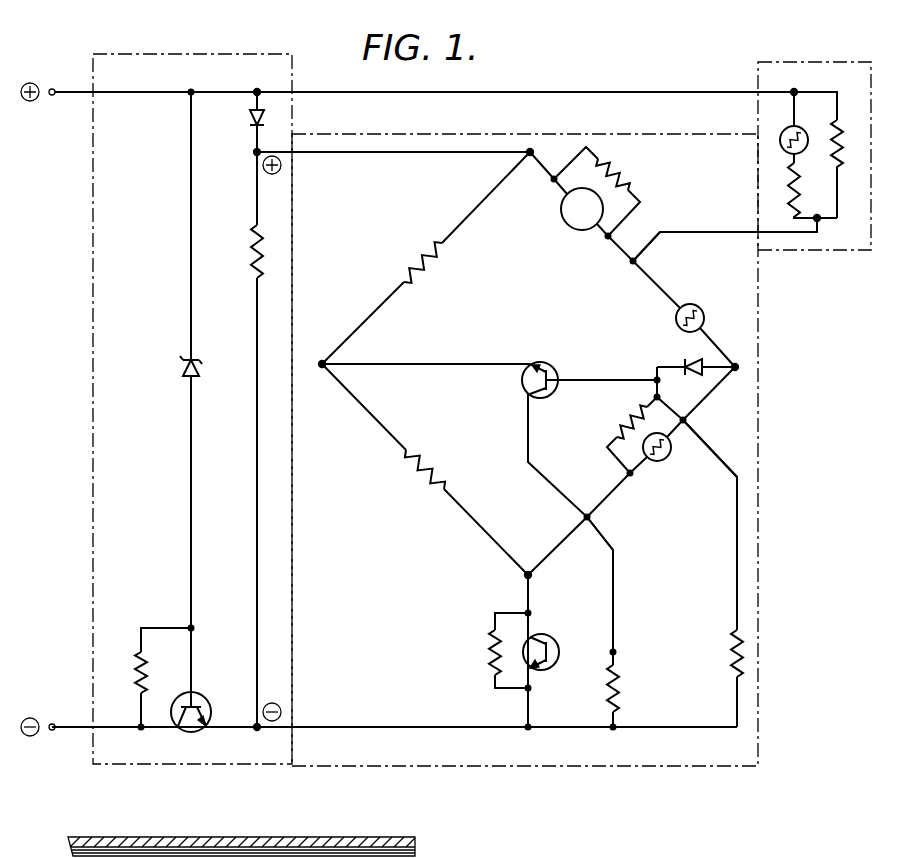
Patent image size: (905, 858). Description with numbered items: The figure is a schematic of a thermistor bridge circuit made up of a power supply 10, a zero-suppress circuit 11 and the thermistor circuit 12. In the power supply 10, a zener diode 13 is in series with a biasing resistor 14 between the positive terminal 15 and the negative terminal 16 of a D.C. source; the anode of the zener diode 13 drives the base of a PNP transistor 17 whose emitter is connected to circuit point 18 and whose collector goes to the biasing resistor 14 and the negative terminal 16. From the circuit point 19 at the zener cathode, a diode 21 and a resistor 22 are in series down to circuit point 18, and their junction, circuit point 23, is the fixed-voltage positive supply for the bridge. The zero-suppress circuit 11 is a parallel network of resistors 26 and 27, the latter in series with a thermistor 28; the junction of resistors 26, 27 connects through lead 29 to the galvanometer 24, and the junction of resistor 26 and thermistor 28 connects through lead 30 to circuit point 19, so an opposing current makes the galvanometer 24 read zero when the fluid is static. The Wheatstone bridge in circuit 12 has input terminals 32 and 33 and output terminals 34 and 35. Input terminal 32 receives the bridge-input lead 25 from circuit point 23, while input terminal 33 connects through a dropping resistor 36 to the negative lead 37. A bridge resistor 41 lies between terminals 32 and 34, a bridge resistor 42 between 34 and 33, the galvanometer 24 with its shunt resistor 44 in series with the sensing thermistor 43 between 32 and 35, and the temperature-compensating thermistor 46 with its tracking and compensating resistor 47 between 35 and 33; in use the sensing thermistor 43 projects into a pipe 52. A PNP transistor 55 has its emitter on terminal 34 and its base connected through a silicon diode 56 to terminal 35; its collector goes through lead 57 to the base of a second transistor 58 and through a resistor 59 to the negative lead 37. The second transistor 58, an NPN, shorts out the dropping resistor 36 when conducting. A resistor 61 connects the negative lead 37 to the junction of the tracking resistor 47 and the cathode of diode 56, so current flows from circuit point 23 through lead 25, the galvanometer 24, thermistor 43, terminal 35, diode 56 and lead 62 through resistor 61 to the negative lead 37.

The power supply 10 is at (203, 52).
The zero-suppress circuit 11 is at (810, 62).
The thermistor circuit 12 is at (758, 478).
The zener diode 13 is at (180, 370).
The biasing resistor 14 is at (135, 662).
The positive terminal 15 is at (52, 97).
The negative terminal 16 is at (52, 732).
The PNP transistor 17 is at (189, 734).
The circuit point 18 is at (257, 732).
The circuit point 19 is at (260, 86).
The diode 21 is at (249, 120).
The resistor 22 is at (251, 258).
The circuit point 23 is at (255, 152).
The d'arsonval galvanometer 24 is at (566, 226).
The bridge-input lead 25 is at (352, 156).
The resistor 26 is at (812, 172).
The resistor 27 is at (796, 200).
The thermistor 28 is at (802, 132).
The lead 29 is at (712, 230).
The lead 30 is at (596, 92).
The bridge input terminal 32 is at (545, 153).
The bridge input terminal 33 is at (525, 578).
The bridge output terminal 34 is at (322, 360).
The bridge output terminal 35 is at (736, 364).
The dropping resistor 36 is at (486, 654).
The negative lead 37 is at (378, 724).
The bridge resistor 41 is at (430, 268).
The bridge resistor 42 is at (432, 466).
The sensing thermistor 43 is at (675, 320).
The shunt resistor 44 is at (616, 170).
The temperature-compensating thermistor 46 is at (660, 461).
The tracking and compensating resistor 47 is at (632, 418).
The pipe 52 is at (152, 836).
The PNP transistor 55 is at (548, 362).
The silicon diode 56 is at (688, 360).
The lead 57 is at (613, 584).
The second transistor 58 is at (548, 670).
The resistor 59 is at (620, 688).
The resistor 61 is at (730, 650).
The lead 62 is at (735, 536).